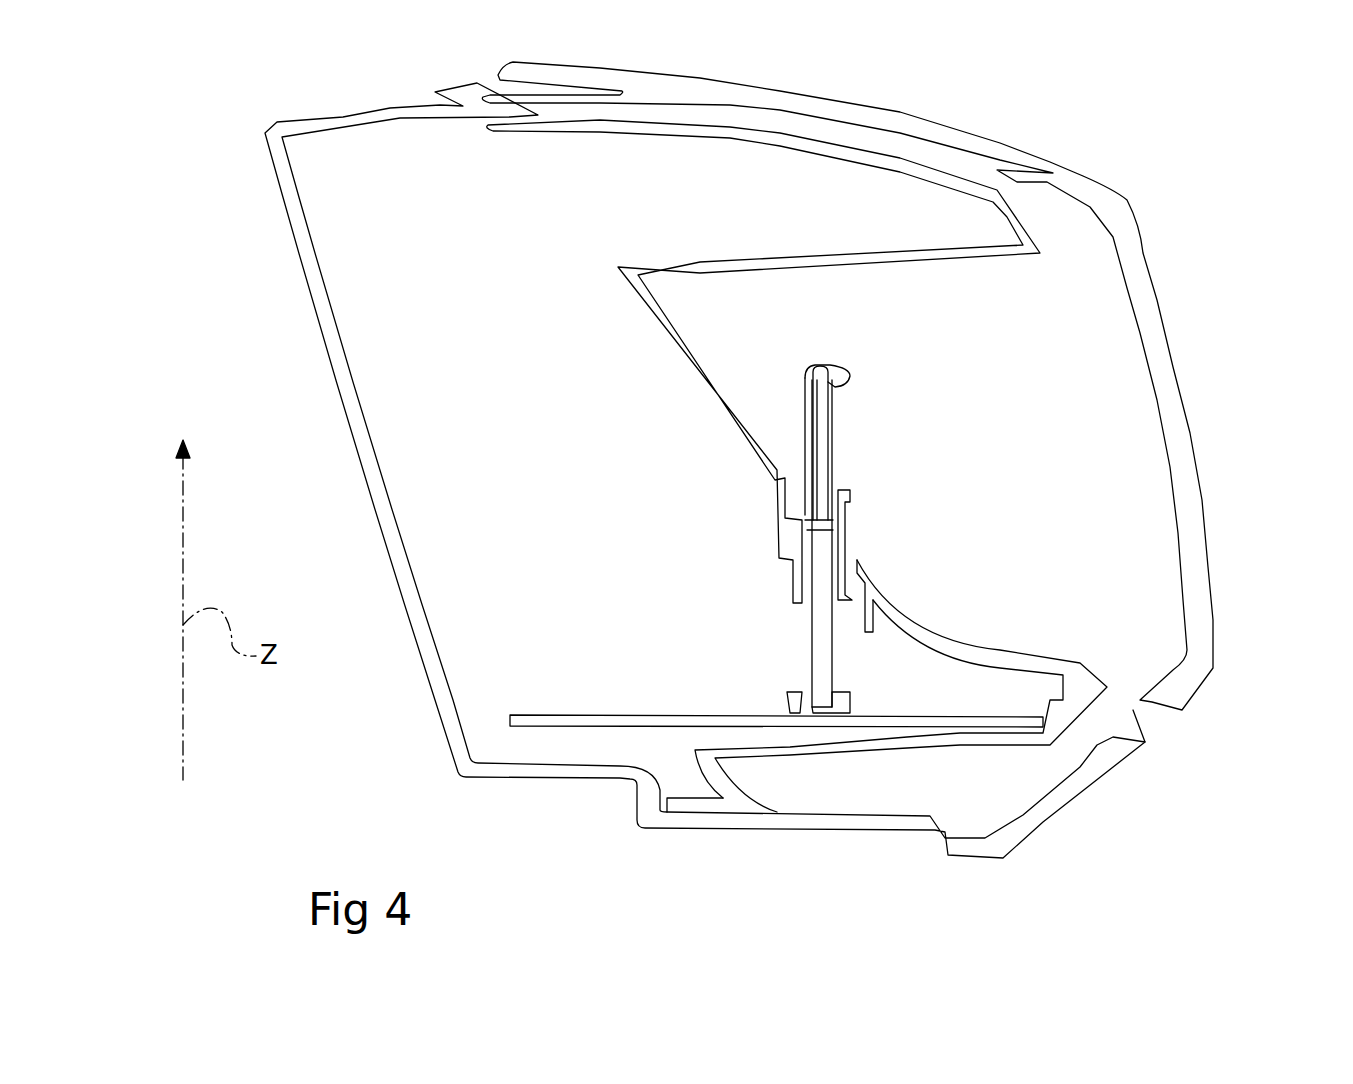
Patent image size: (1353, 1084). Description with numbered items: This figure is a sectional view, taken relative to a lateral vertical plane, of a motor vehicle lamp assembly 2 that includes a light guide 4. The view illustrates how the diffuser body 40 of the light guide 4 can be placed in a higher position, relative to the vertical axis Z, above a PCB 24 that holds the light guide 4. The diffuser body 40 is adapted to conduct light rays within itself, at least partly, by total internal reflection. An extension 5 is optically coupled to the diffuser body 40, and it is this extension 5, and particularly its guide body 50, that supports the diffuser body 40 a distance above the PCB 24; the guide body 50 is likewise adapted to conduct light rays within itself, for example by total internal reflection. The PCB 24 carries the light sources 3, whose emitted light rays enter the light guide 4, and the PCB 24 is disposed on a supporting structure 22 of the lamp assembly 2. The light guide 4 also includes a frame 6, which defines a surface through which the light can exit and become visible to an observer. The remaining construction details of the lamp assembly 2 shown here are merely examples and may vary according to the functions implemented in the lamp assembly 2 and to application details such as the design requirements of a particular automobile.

The motor vehicle lamp assembly 2 is at (192, 188).
The light source 3 is at (822, 713).
The light guide 4 is at (910, 460).
The extension 5 is at (893, 658).
The frame 6 is at (848, 355).
The supporting structure 22 is at (698, 810).
The PCB 24 is at (647, 717).
The diffuser body 40 is at (823, 463).
The guide body 50 is at (822, 628).